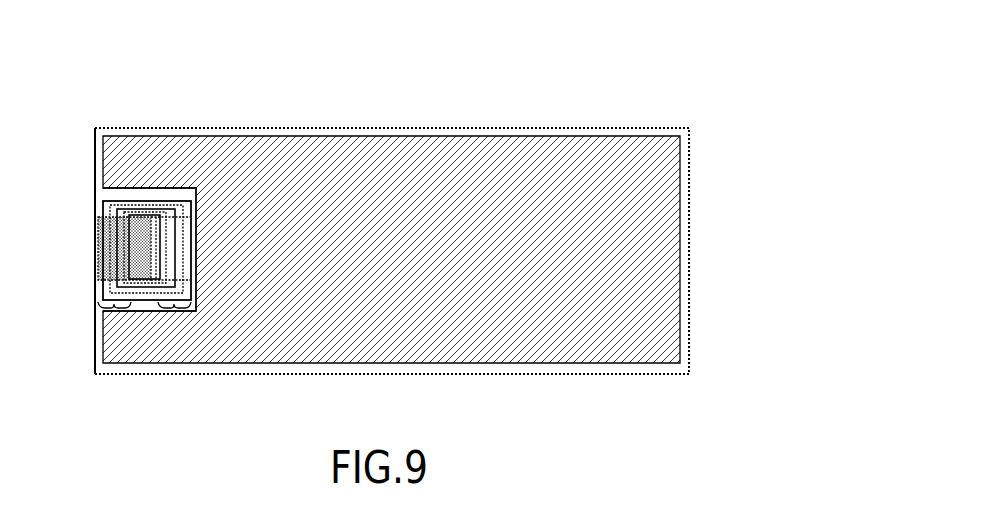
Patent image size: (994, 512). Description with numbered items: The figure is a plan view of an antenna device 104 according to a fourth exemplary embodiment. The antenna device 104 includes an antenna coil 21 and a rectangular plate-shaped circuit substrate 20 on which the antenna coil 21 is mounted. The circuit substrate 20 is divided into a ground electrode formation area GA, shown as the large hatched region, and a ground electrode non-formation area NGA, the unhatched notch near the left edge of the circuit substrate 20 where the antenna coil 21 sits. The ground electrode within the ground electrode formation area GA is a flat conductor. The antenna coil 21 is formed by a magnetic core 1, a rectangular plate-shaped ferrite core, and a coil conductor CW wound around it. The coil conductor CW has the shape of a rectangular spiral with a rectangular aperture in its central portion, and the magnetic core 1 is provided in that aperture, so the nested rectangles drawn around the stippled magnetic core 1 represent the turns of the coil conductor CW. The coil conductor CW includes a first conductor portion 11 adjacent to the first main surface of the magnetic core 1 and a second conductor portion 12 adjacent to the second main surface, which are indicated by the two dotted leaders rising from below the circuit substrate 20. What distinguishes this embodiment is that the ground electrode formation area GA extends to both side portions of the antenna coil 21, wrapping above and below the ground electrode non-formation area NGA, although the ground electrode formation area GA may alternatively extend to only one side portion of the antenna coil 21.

The antenna device 104 is at (644, 26).
The circuit substrate 20 is at (682, 119).
The antenna coil 21 is at (78, 193).
The magnetic core 1 is at (90, 242).
The first conductor portion 11 is at (103, 197).
The second conductor portion 12 is at (167, 201).
The ground electrode formation area GA is at (347, 156).
The ground electrode non-formation area NGA is at (119, 185).
The coil conductor CW is at (142, 200).